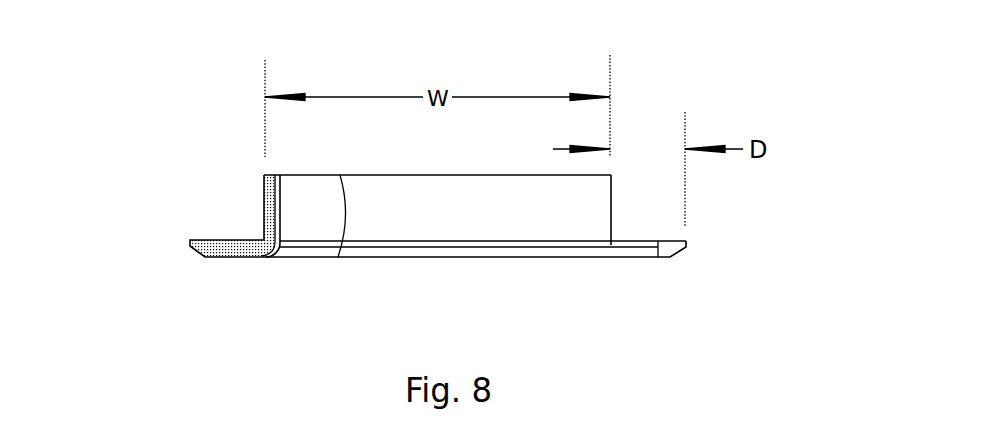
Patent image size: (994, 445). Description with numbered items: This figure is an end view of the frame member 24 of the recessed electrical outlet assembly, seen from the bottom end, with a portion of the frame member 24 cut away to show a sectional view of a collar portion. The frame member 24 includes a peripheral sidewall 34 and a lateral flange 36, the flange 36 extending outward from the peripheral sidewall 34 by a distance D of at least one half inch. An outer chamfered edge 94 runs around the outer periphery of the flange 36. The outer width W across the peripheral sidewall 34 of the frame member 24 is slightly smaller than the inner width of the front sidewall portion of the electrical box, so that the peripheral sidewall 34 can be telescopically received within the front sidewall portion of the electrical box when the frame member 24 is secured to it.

The frame member 24 is at (168, 176).
The peripheral sidewall 34 is at (263, 198).
The lateral flange 36 is at (228, 250).
The outer chamfered edge 94 is at (542, 253).